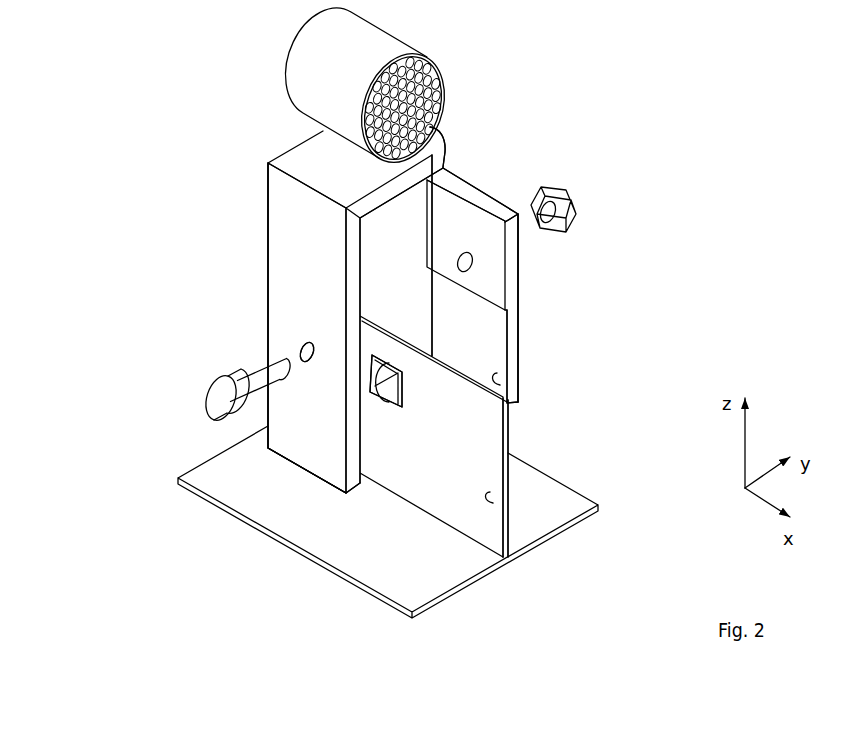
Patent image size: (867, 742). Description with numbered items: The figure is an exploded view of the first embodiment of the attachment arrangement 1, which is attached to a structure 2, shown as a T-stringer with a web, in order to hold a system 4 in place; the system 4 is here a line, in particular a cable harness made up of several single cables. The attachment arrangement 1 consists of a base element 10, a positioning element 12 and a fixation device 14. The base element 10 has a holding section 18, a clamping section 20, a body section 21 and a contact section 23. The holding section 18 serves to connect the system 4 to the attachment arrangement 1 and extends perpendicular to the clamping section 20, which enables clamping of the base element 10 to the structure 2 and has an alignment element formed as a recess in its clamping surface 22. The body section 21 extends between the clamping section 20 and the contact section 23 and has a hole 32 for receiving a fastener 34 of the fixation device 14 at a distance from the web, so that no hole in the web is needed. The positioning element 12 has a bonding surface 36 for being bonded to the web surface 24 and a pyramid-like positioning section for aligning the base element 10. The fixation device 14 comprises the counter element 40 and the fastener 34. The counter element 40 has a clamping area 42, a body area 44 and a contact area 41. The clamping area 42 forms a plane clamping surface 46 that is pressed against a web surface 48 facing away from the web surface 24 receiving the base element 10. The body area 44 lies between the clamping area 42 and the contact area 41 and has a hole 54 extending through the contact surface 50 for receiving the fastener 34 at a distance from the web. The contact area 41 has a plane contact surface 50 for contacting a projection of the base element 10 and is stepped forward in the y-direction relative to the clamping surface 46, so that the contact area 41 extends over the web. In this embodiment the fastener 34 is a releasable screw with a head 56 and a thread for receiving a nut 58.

The attachment arrangement 1 is at (165, 118).
The structure 2 is at (162, 478).
The system 4 is at (447, 63).
The base element 10 is at (267, 222).
The positioning element 12 is at (267, 448).
The fixation device 14 is at (410, 267).
The holding section 18 is at (433, 145).
The clamping section 20 is at (287, 417).
The body section 21 is at (301, 350).
The clamping surface 22 is at (362, 405).
The contact section 23 is at (305, 265).
The web surface 24 is at (493, 503).
The hole 32 is at (287, 350).
The fastener 34 is at (169, 383).
The bonding surface 36 is at (403, 387).
The counter element 40 is at (520, 275).
The contact area 41 is at (520, 235).
The clamping area 42 is at (518, 353).
The body area 44 is at (518, 293).
The clamping surface 46 is at (500, 385).
The web surface 48 is at (508, 467).
The contact surface 50 is at (457, 207).
The hole 54 is at (471, 262).
The head 56 is at (217, 399).
The nut 58 is at (557, 190).